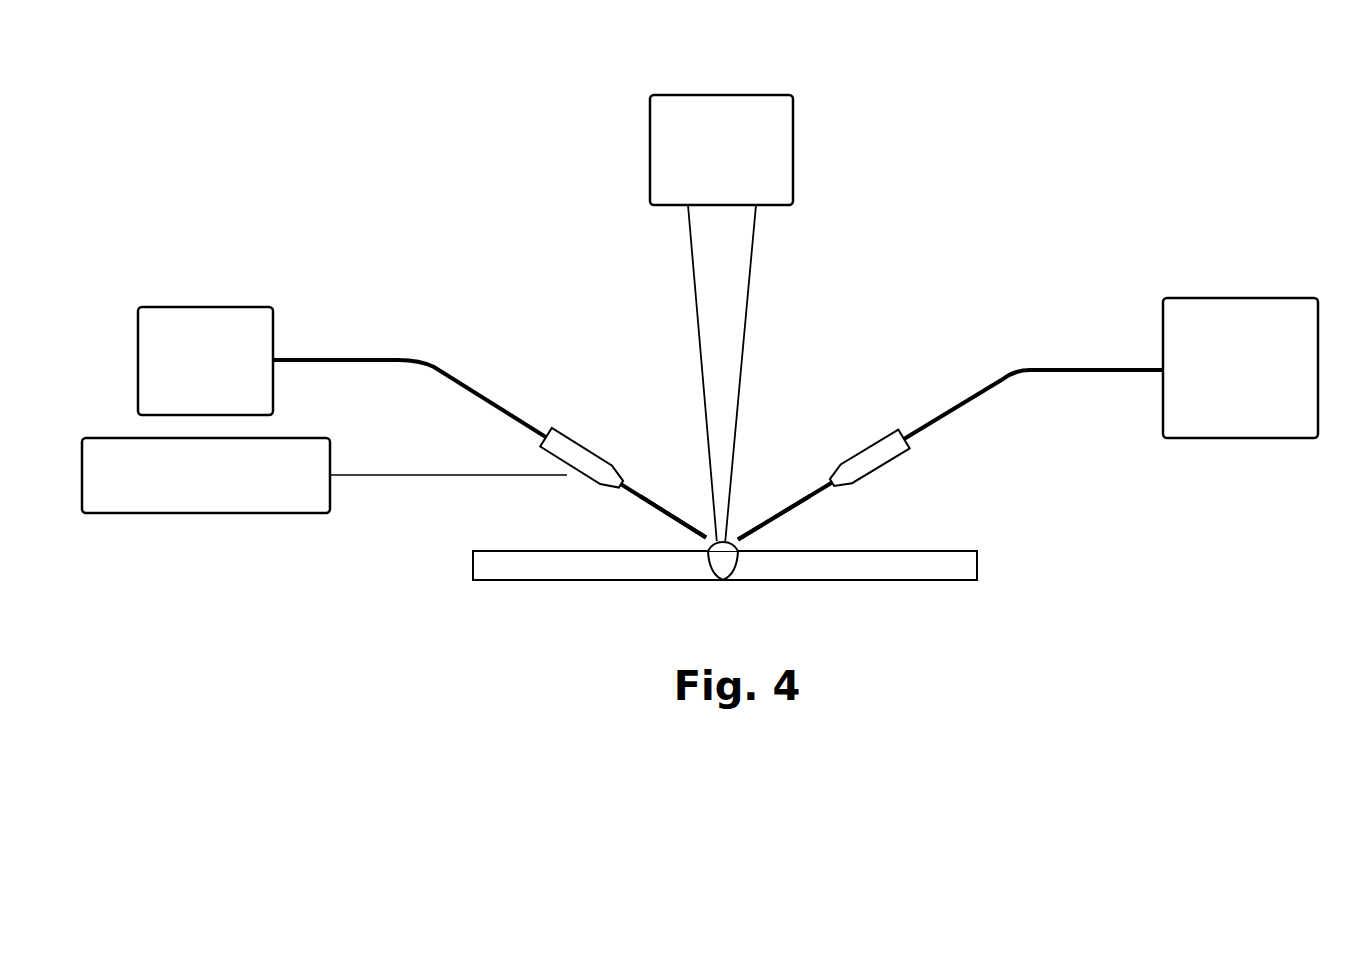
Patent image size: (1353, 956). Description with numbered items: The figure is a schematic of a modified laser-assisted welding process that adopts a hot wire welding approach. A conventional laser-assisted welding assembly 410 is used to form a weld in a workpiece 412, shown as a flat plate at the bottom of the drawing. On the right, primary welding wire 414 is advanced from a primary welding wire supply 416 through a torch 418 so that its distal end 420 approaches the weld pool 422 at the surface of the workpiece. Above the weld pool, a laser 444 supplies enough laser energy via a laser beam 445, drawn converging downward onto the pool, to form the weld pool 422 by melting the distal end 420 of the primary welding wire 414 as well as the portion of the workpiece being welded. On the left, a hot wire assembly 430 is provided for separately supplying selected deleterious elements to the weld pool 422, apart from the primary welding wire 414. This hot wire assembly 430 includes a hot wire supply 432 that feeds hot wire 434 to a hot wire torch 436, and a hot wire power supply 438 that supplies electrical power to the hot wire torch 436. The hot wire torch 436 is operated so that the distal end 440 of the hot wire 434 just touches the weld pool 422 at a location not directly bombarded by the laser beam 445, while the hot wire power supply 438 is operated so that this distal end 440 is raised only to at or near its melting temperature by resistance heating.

The laser-assisted welding assembly 410 is at (1086, 102).
The workpiece 412 is at (858, 565).
The primary welding wire 414 is at (950, 412).
The primary welding wire supply 416 is at (1163, 338).
The torch 418 is at (865, 447).
The distal end 420 is at (797, 510).
The weld pool 422 is at (735, 553).
The hot wire assembly 430 is at (340, 224).
The hot wire supply 432 is at (203, 307).
The hot wire 434 is at (448, 378).
The hot wire torch 436 is at (583, 445).
The hot wire power supply 438 is at (203, 513).
The distal end 440 is at (650, 503).
The laser 444 is at (793, 147).
The laser beam 445 is at (745, 330).